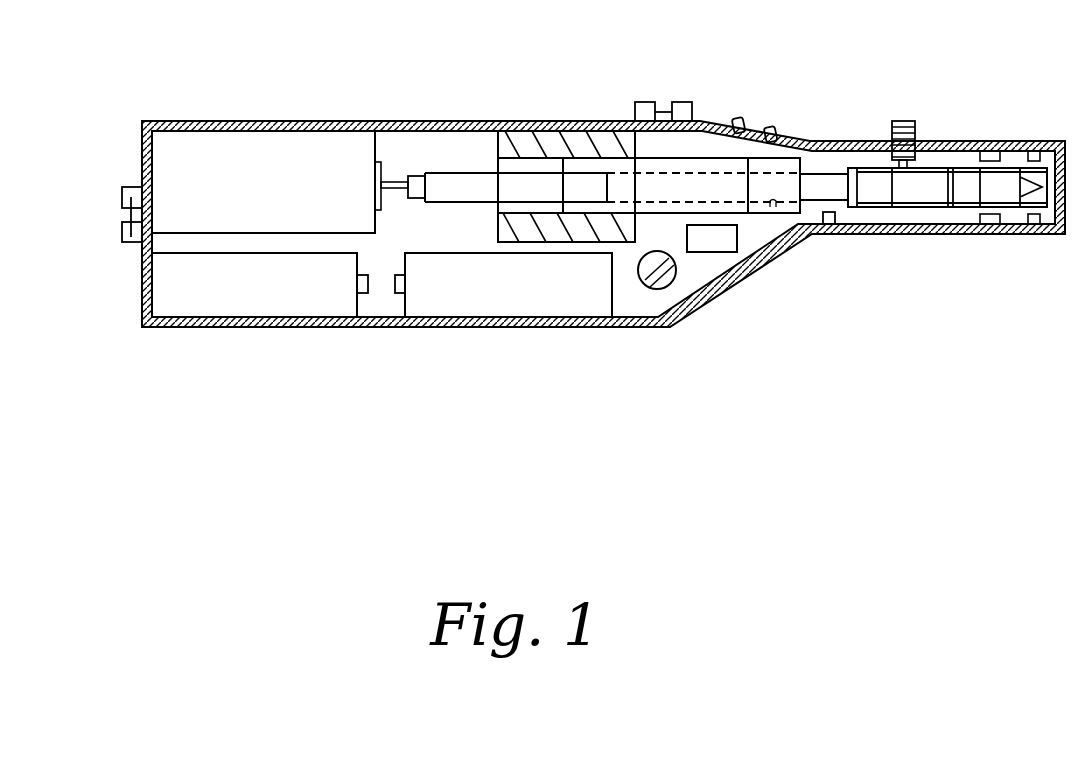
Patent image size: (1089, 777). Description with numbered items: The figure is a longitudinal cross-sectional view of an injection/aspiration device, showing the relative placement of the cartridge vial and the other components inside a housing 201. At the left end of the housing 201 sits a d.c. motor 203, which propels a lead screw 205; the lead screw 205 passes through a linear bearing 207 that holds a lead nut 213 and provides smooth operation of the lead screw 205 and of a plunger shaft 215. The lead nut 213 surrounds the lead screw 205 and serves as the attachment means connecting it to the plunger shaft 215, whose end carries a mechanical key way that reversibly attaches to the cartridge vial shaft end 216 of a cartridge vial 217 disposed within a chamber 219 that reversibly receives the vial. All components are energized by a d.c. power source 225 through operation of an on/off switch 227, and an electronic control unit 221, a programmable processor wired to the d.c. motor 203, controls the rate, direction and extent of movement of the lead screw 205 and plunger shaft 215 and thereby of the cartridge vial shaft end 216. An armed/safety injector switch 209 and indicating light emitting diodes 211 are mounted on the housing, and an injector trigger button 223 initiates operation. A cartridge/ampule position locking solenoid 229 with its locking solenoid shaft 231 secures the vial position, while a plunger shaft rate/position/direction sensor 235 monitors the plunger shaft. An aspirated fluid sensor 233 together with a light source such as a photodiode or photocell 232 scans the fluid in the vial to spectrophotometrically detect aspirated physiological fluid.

The housing 201 is at (163, 328).
The d.c. motor 203 is at (222, 150).
The lead screw 205 is at (452, 183).
The linear bearing 207 is at (532, 143).
The armed/safety injector switch 209 is at (637, 118).
The indicating light emitting diodes 211 is at (740, 120).
The lead nut 213 is at (782, 167).
The plunger shaft 215 is at (830, 187).
The cartridge vial shaft end 216 is at (923, 188).
The cartridge vial 217 is at (960, 208).
The chamber 219 is at (897, 215).
The electronic control unit 221 is at (710, 252).
The injector trigger button 223 is at (645, 282).
The d.c. power source 225 is at (272, 283).
The on/off switch 227 is at (121, 242).
The cartridge/ampule position locking solenoid 229 is at (905, 121).
The cartridge/ampule position locking solenoid shaft 231 is at (870, 150).
The photodiode or photocell 232 is at (993, 140).
The aspirated fluid sensor 233 is at (1000, 232).
The plunger shaft rate/position/direction sensor 235 is at (827, 226).